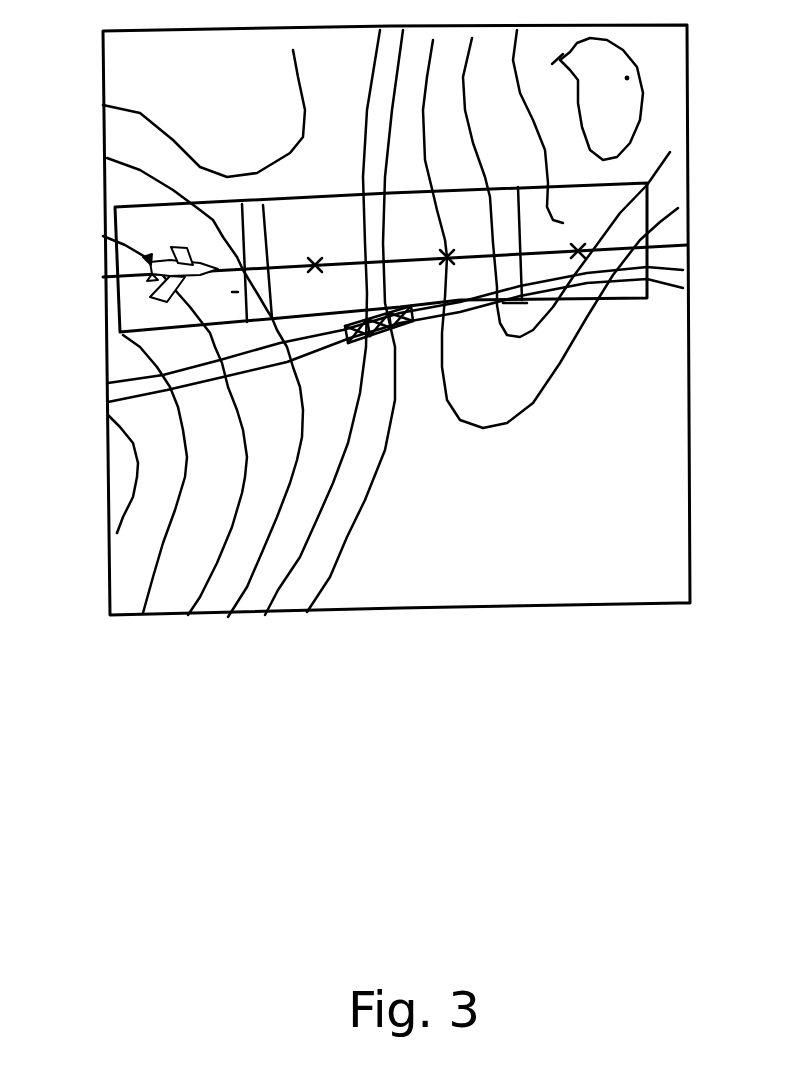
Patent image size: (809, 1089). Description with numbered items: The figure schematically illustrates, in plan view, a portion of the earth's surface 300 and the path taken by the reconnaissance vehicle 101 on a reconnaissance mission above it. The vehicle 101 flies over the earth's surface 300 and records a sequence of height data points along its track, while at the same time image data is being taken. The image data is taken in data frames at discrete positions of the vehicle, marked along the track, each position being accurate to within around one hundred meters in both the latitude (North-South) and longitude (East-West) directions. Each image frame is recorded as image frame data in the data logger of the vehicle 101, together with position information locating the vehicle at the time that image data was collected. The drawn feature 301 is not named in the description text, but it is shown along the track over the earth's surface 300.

The vehicle 101 is at (117, 286).
The portion of the earth's surface 300 is at (432, 321).
The flight plan route corridor 301 is at (430, 292).